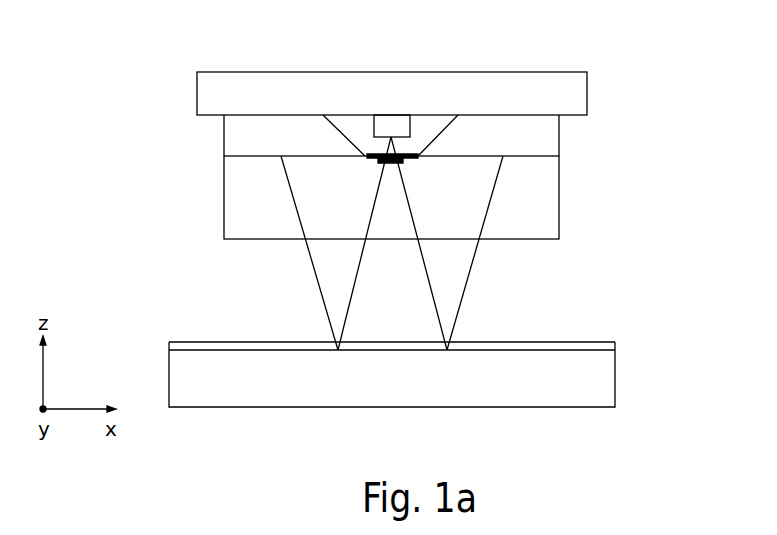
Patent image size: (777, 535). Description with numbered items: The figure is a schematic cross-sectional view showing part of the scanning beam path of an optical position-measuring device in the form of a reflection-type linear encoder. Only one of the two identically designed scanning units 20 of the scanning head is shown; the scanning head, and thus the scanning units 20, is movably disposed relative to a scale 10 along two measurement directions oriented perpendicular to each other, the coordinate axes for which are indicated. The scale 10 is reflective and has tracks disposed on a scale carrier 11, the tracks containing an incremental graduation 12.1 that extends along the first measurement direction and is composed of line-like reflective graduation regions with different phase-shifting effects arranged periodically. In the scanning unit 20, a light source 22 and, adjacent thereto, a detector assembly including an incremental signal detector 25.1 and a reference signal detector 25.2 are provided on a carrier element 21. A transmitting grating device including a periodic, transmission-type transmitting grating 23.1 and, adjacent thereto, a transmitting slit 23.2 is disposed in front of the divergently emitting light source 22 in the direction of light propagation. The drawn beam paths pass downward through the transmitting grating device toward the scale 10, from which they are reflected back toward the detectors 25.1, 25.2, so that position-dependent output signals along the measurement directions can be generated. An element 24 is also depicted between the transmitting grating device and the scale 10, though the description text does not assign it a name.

The scale 10 is at (440, 369).
The scale carrier 11 is at (272, 395).
The incremental graduation 12.1 is at (589, 345).
The scanning unit 20 is at (150, 168).
The carrier element 21 is at (247, 90).
The light source 22 is at (396, 128).
The transmitting grating 23.1 is at (541, 172).
The transmitting slit 23.2 is at (392, 158).
The optical body 24 is at (438, 197).
The incremental signal detector 25.1 is at (480, 135).
The reference signal detector 25.2 is at (390, 135).